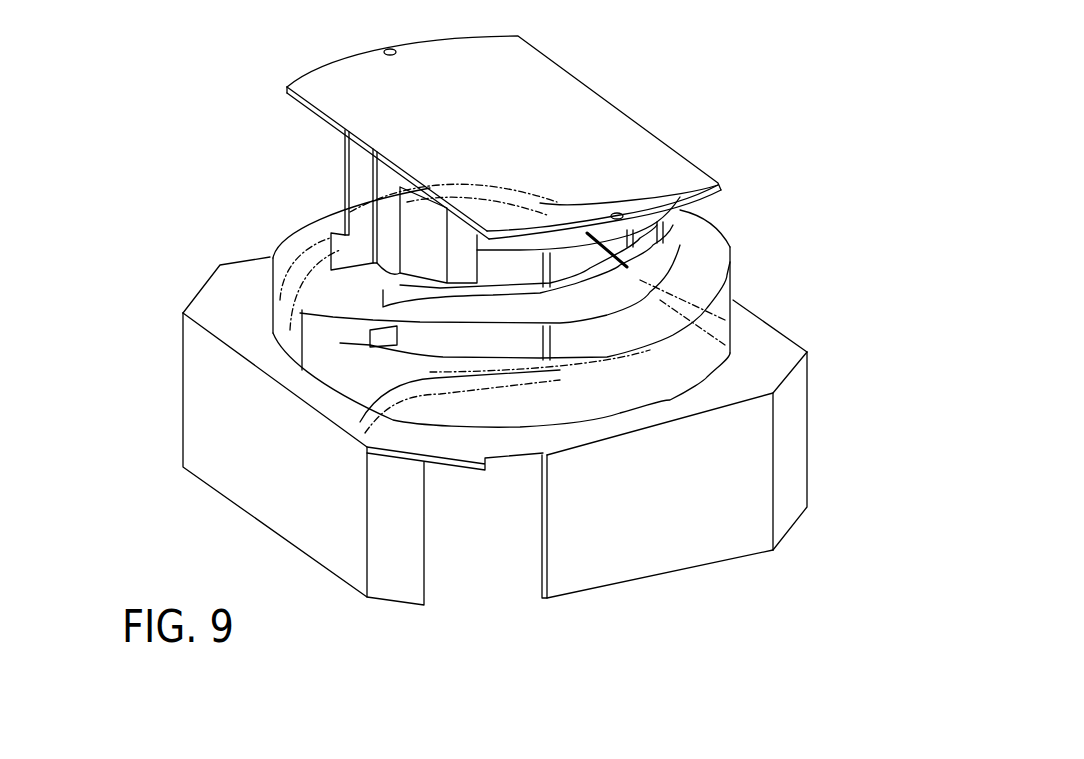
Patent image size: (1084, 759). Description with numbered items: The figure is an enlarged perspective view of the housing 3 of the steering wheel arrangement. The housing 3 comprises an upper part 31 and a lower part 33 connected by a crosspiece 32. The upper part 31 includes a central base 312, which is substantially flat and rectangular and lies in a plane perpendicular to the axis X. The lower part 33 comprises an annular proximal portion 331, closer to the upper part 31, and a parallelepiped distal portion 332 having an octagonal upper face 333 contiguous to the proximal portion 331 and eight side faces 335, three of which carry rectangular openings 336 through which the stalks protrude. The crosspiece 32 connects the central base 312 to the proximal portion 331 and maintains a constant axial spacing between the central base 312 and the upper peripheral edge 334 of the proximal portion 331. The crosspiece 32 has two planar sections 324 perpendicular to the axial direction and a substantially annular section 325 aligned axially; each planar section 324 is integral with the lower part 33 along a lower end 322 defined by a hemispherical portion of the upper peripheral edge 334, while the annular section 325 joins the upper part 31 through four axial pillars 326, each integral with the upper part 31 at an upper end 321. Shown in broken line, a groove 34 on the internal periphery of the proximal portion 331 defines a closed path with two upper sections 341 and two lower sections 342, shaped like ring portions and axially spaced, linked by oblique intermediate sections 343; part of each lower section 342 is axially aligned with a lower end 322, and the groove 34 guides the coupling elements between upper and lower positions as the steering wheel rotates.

The housing 3 is at (826, 214).
The upper part 31 is at (586, 59).
The central base 312 is at (487, 113).
The upper end 321 is at (408, 172).
The crosspiece 32 is at (694, 238).
The lower end 322 is at (302, 323).
The planar section 324 is at (306, 271).
The substantially annular section 325 is at (357, 261).
The pillar 326 is at (331, 174).
The lower part 33 is at (830, 387).
The proximal portion 331 is at (748, 286).
The distal portion 332 is at (821, 450).
The octagonal upper face 333 is at (778, 349).
The upper peripheral edge 334 is at (458, 339).
The side face 335 is at (723, 541).
The rectangular opening 336 is at (455, 581).
The groove 34 is at (268, 366).
The upper section 341 is at (509, 170).
The lower section 342 is at (689, 297).
The intermediate section 343 is at (687, 183).